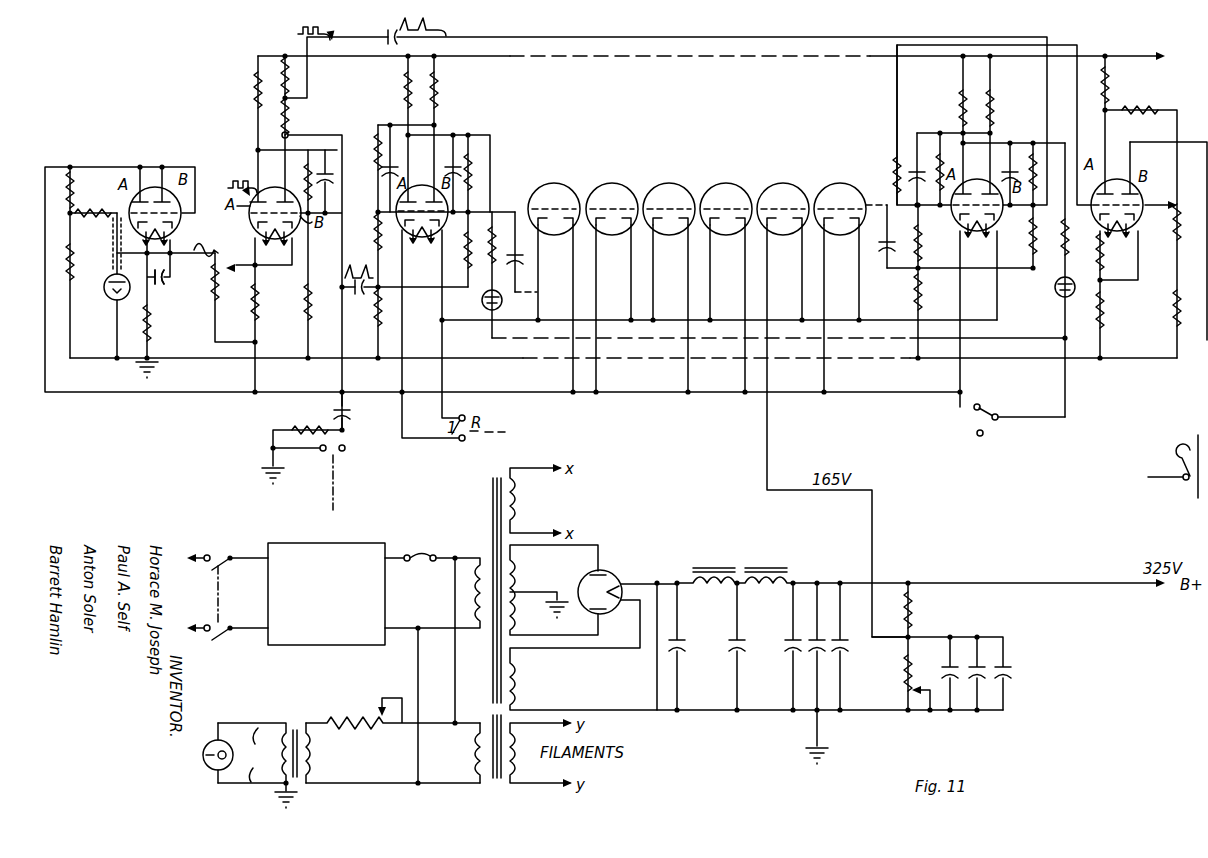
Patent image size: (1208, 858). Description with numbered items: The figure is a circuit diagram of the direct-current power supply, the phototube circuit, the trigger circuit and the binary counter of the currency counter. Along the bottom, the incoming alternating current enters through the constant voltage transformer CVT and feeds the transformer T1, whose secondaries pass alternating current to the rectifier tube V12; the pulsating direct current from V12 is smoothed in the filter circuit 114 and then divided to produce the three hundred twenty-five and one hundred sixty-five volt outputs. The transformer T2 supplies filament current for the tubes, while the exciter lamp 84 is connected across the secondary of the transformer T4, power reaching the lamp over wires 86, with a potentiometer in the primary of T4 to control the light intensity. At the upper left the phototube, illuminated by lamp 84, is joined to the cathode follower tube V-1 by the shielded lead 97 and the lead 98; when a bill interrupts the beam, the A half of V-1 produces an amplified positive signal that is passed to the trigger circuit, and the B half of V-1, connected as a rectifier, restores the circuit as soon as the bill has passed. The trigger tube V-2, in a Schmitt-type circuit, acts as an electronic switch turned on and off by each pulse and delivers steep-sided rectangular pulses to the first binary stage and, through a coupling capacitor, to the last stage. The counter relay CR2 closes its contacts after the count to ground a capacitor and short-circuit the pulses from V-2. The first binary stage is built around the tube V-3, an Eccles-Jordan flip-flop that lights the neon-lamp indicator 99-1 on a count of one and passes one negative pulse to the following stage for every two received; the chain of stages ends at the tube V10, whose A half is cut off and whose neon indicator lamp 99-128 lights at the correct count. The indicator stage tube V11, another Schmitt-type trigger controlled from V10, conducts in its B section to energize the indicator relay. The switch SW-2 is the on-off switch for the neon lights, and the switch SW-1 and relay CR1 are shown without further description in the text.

The exciter lamp 84 is at (207, 760).
The wires 86 is at (250, 755).
The shielded lead 97 is at (126, 244).
The lead 98 is at (104, 321).
The neon-lamp indicator 99-1 is at (476, 300).
The neon indicator lamp 99-128 is at (1037, 287).
The filter circuit 114 is at (778, 562).
The cathode follower tube V-1 is at (155, 195).
The trigger circuit tube V-2 is at (275, 208).
The first binary counter stage tube V-3 is at (422, 205).
The last binary stage tube V10 is at (977, 276).
The indicator stage tube V11 is at (1117, 259).
The rectifier tube V12 is at (627, 583).
The constant voltage transformer CVT is at (326, 594).
The transformer T1 is at (495, 580).
The filament transformer T2 is at (523, 746).
The exciter lamp transformer T4 is at (264, 754).
The power switch SW-1 is at (227, 589).
The on-off switch for the neon lights SW-2 is at (1019, 412).
The relay CR1 is at (1194, 436).
The counter relay CR2 is at (351, 470).